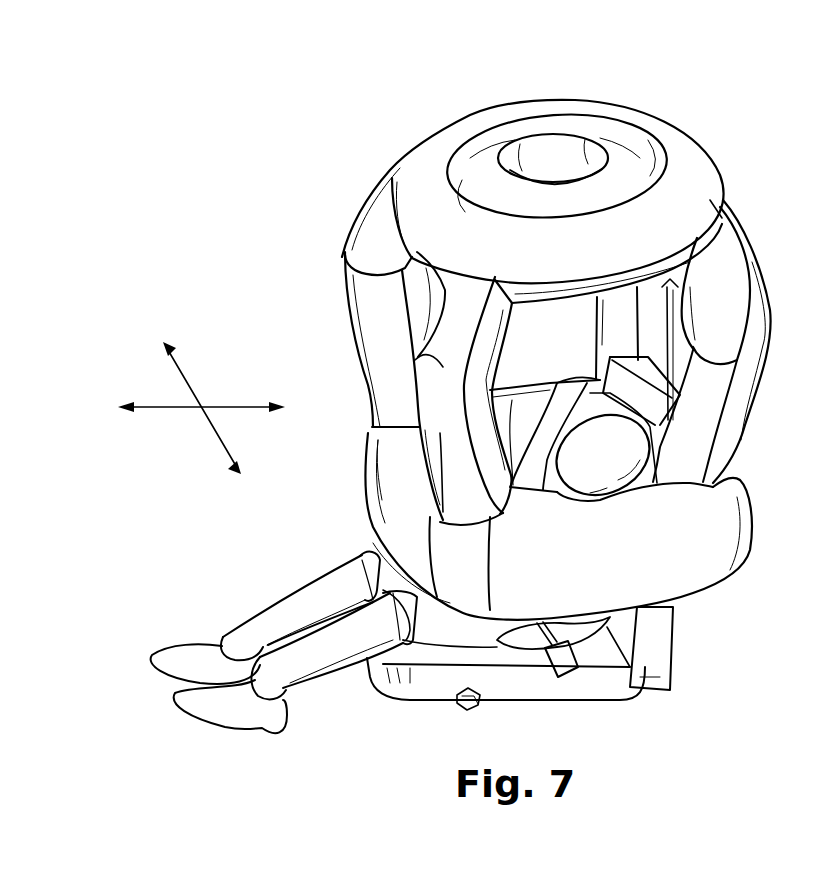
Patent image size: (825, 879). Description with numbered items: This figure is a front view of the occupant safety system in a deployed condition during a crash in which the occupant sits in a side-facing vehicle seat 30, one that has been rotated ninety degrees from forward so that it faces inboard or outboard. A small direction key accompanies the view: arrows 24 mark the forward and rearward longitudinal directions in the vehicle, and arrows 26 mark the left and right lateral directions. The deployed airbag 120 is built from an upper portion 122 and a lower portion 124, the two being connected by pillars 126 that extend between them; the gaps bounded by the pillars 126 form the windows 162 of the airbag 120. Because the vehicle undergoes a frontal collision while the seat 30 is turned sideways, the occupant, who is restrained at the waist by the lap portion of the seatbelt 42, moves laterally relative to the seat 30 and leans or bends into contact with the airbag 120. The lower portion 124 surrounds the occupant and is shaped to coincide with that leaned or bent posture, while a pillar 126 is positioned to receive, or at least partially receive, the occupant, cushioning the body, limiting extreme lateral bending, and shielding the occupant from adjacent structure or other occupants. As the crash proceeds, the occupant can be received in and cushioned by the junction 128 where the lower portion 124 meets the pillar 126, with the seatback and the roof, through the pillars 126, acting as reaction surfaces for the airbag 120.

The airbag 120 is at (403, 135).
The upper portion 122 is at (615, 138).
The pillars 126 is at (443, 367).
The junction 128 is at (403, 430).
The windows 162 is at (392, 410).
The seatbelt 42 is at (575, 398).
The lower portion 124 is at (627, 553).
The vehicle seat 30 is at (650, 660).
The arrows 24 is at (207, 420).
The arrows 26 is at (165, 406).